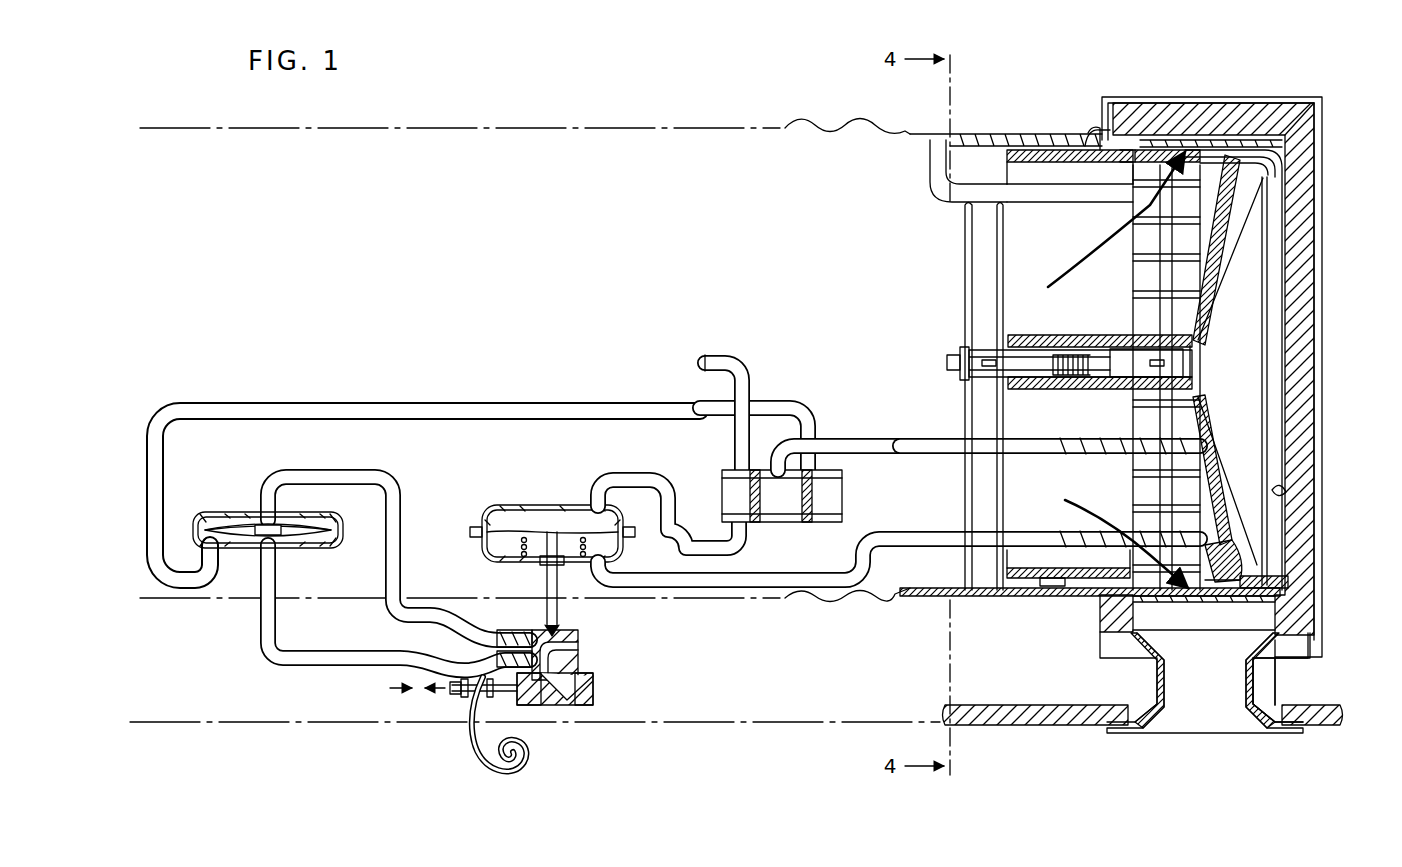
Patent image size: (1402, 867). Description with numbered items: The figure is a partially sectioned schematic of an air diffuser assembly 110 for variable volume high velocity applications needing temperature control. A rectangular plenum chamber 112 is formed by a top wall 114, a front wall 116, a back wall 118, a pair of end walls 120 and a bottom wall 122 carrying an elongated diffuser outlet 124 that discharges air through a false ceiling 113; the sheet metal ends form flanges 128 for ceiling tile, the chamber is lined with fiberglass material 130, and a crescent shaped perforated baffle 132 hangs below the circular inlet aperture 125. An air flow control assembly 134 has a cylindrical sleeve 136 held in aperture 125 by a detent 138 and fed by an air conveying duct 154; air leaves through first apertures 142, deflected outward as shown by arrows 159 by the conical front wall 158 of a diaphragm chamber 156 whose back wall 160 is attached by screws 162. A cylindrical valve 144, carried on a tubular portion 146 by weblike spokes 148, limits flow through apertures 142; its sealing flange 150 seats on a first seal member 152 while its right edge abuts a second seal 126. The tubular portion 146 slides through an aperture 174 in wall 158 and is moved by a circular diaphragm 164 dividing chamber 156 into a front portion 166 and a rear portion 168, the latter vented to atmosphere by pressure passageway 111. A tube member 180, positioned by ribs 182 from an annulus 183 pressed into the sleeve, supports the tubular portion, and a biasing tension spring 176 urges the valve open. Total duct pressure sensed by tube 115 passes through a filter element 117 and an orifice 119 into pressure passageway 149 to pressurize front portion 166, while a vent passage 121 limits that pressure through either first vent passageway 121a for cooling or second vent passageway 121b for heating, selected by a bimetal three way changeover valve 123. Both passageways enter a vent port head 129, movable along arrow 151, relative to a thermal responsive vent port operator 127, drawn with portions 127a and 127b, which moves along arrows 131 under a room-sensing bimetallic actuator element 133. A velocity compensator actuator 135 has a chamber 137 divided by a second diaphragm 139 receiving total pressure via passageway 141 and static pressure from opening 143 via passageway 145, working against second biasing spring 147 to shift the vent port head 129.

The air diffuser assembly 110 is at (1257, 88).
The pressure passageway 111 is at (930, 168).
The air diffuser plenum chamber 112 is at (1322, 131).
The false ceiling 113 is at (1312, 727).
The top wall 114 is at (1180, 103).
The tube 115 is at (733, 356).
The front wall 116 is at (1098, 628).
The filter element 117 is at (725, 500).
The back wall 118 is at (1315, 411).
The restrictor or orifice 119 is at (808, 523).
The end walls 120 is at (1290, 114).
The vent passage 121 is at (422, 403).
The first vent passageway 121a is at (400, 560).
The second vent passageway 121b is at (330, 666).
The bottom wall 122 is at (1290, 634).
The snap acting bimetal actuated three way changeover valve 123 is at (316, 549).
The elongated diffuser outlet 124 is at (1225, 734).
The circular air inlet aperture 125 is at (1095, 128).
The second annular resilient seal 126 is at (1225, 138).
The thermal responsive vent port operator 127 is at (575, 706).
The valve body right section 127a is at (594, 688).
The valve body left section 127b is at (530, 706).
The flanges 128 is at (1110, 728).
The vent port head 129 is at (580, 640).
The fiberglass material 130 is at (1300, 192).
The arrows 131 is at (420, 696).
The crescent shaped perforated baffle 132 is at (1183, 600).
The bimetallic actuator element 133 is at (497, 771).
The air flow control assembly 134 is at (1056, 125).
The velocity compensator actuator 135 is at (478, 526).
The cylindrical sleeve 136 is at (1025, 140).
The chamber 137 is at (518, 506).
The detent 138 is at (1140, 150).
The second movable diaphragm 139 is at (565, 531).
The pressure passageway 141 is at (628, 480).
The first apertures 142 is at (1170, 270).
The opening 143 is at (1195, 600).
The cylindrically shaped valve 144 is at (1093, 168).
The pressure passageway 145 is at (925, 547).
The tubular portion 146 is at (1095, 346).
The second biasing spring 147 is at (486, 552).
The weblike spokes 148 is at (1010, 280).
The pressure passageway 149 is at (860, 438).
The annular sealing flange 150 is at (1012, 577).
The arrow 151 is at (545, 592).
The first annular resilient seal member 152 is at (1070, 578).
The air conveying duct 154 is at (505, 128).
The diaphragm chamber 156 is at (1265, 246).
The diaphragm chamber front wall 158 is at (1214, 430).
The arrows 159 is at (1075, 272).
The diaphragm chamber back wall 160 is at (1290, 491).
The screws 162 is at (1300, 584).
The axially movable circular diaphragm 164 is at (1225, 470).
The front portion 166 is at (1210, 415).
The rear portion 168 is at (1213, 338).
The aperture 174 is at (1125, 388).
The biasing tension spring 176 is at (1056, 354).
The tube member 180 is at (962, 370).
The ribs 182 is at (965, 280).
The annulus 183 is at (957, 198).